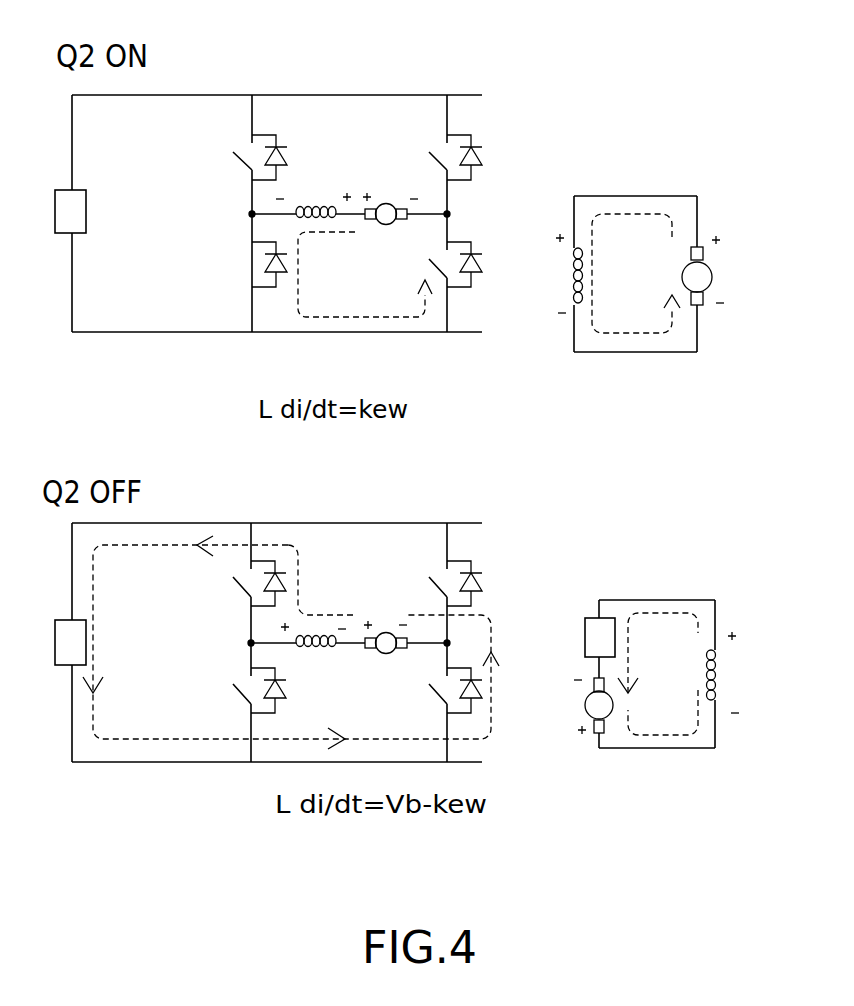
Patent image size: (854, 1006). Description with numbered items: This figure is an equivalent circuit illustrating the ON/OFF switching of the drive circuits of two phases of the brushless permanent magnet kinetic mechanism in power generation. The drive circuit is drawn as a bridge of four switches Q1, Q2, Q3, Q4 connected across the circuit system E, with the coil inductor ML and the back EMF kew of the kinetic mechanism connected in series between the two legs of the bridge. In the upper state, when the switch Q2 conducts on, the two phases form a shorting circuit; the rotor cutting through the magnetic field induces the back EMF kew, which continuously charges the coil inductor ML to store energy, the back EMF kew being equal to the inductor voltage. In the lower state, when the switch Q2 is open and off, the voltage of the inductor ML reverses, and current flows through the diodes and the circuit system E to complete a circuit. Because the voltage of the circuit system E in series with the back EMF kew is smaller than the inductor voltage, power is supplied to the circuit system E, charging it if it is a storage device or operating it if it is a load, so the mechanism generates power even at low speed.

The switch Q1 is at (242, 370).
The switch Q2 is at (242, 477).
The switch Q3 is at (437, 368).
The switch Q4 is at (440, 477).
The circuit system E is at (319, 427).
The back EMF kew is at (565, 469).
The coil inductor ML is at (553, 454).